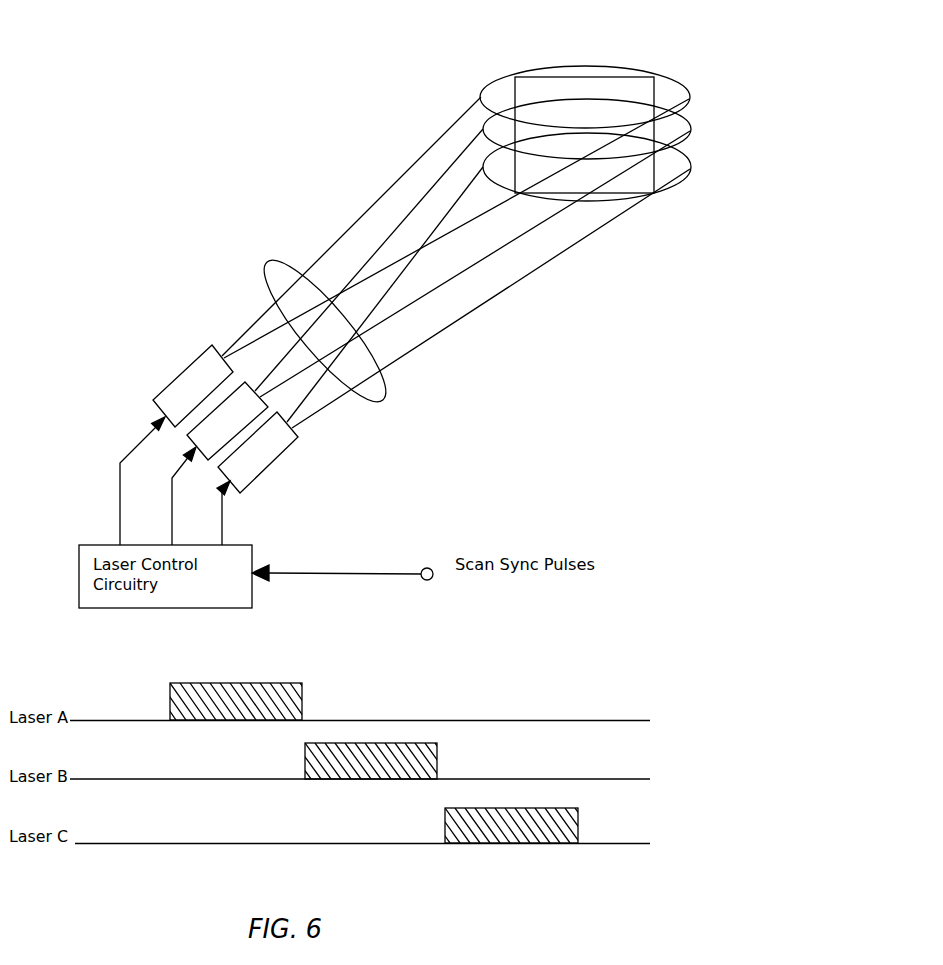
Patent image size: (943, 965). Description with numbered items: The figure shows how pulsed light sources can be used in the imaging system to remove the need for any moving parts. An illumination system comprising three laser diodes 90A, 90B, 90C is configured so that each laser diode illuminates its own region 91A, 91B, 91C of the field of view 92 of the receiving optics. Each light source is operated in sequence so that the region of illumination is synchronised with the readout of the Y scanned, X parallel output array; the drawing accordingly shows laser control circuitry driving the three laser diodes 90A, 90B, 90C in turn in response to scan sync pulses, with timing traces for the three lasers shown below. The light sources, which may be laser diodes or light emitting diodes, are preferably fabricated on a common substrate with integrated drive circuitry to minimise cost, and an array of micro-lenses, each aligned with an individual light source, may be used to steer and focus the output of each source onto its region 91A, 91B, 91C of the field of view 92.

The field of view 92 is at (570, 77).
The region 91A is at (670, 84).
The region 91B is at (689, 121).
The region 91C is at (688, 163).
The laser diode 90A is at (153, 399).
The laser diode 90B is at (213, 404).
The laser diode 90C is at (265, 477).